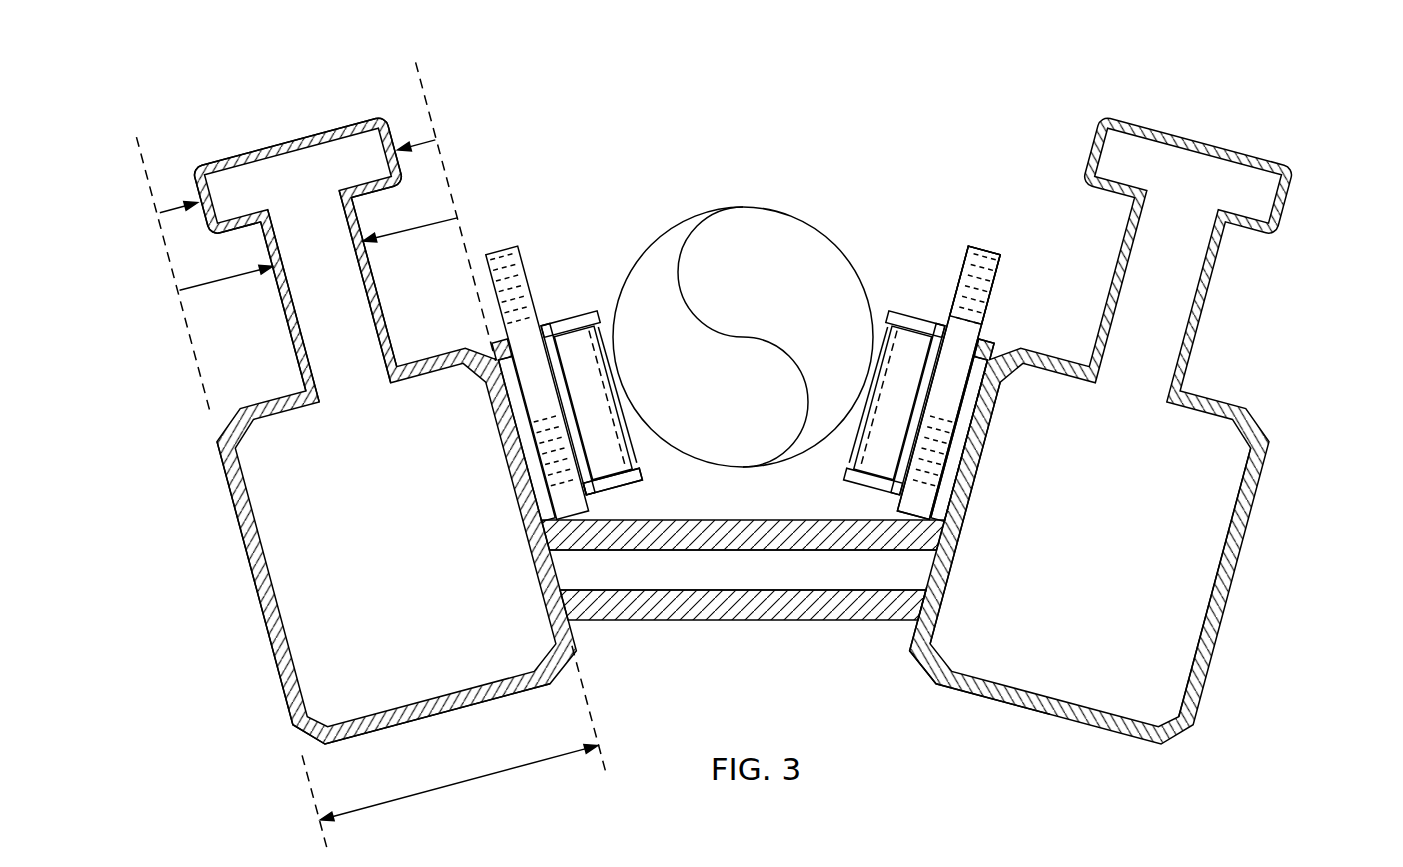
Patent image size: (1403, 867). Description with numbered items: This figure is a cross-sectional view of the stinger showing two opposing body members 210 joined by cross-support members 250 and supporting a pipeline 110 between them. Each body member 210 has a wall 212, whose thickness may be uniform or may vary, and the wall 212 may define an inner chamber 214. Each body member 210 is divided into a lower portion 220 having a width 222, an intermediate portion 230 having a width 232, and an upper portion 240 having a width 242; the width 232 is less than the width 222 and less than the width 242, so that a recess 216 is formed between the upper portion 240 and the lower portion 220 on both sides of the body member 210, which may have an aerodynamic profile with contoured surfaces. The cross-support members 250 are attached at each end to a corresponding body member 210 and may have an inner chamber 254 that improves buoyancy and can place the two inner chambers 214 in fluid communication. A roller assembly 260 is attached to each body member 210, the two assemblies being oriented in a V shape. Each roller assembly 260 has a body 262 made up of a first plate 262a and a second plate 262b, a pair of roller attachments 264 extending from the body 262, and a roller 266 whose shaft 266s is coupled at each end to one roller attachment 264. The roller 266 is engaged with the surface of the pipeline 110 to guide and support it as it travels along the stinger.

The pipeline 110 is at (784, 208).
The body member 210 is at (367, 95).
The wall 212 is at (1205, 680).
The inner chamber 214 is at (1218, 494).
The recess 216 is at (398, 308).
The lower portion 220 is at (268, 712).
The width of lower portion 222 is at (472, 790).
The intermediate portion 230 is at (284, 376).
The width of intermediate portion 232 is at (455, 215).
The upper portion 240 is at (193, 133).
The width of upper portion 242 is at (432, 144).
The cross-support member 250 is at (790, 603).
The inner chamber of cross-support member 254 is at (693, 568).
The roller assembly 260 is at (527, 238).
The body of roller assembly 262 is at (1002, 262).
The first plate 262a is at (982, 246).
The second plate 262b is at (1003, 351).
The roller attachment 264 is at (872, 316).
The roller 266 is at (580, 332).
The shaft 266s is at (618, 481).